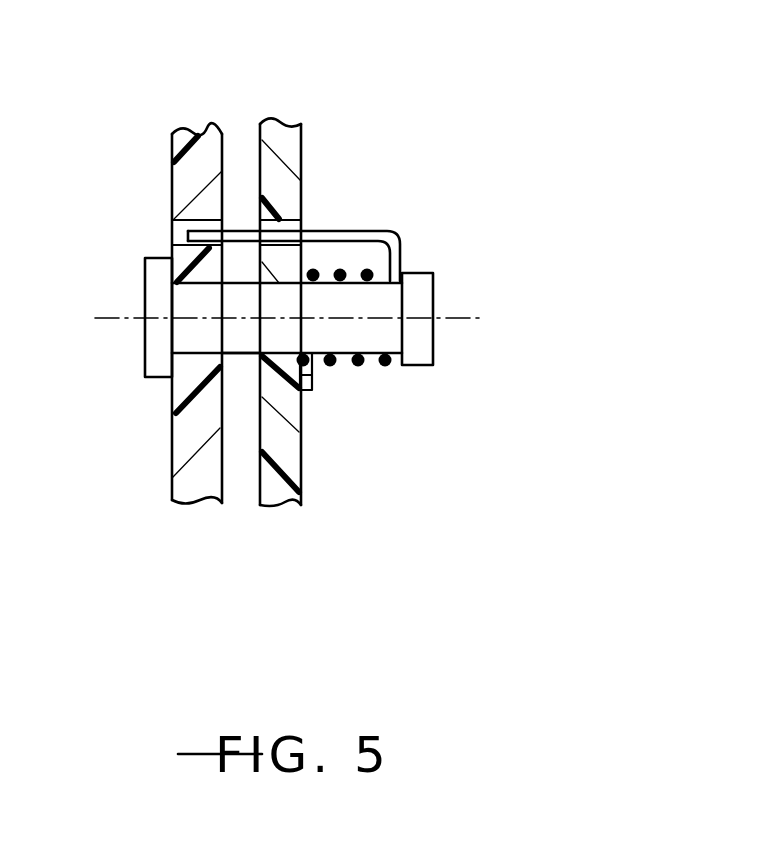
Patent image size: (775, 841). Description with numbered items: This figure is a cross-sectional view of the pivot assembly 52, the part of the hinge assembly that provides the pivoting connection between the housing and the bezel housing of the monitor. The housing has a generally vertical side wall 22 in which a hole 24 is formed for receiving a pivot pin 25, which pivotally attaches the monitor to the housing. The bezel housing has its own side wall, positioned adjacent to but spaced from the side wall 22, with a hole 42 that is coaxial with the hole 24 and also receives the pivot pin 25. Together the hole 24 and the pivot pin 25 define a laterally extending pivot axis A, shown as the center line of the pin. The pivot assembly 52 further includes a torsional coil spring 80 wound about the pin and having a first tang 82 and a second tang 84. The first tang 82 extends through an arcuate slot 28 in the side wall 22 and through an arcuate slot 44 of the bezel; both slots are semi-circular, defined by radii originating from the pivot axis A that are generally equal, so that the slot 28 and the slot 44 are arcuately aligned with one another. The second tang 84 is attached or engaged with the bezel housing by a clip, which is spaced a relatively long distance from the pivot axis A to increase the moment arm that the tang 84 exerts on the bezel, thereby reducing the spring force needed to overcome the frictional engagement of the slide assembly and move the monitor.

The pivot assembly 52 is at (602, 88).
The pivot axis A is at (453, 318).
The side wall 22 is at (184, 443).
The arcuate slot 44 is at (300, 233).
The arcuate slot 28 is at (184, 226).
The hole 24 is at (193, 353).
The pivot pin 25 is at (350, 335).
The hole 42 is at (275, 353).
The first tang 82 is at (343, 229).
The torsional coil spring 80 is at (380, 270).
The second tang 84 is at (312, 380).